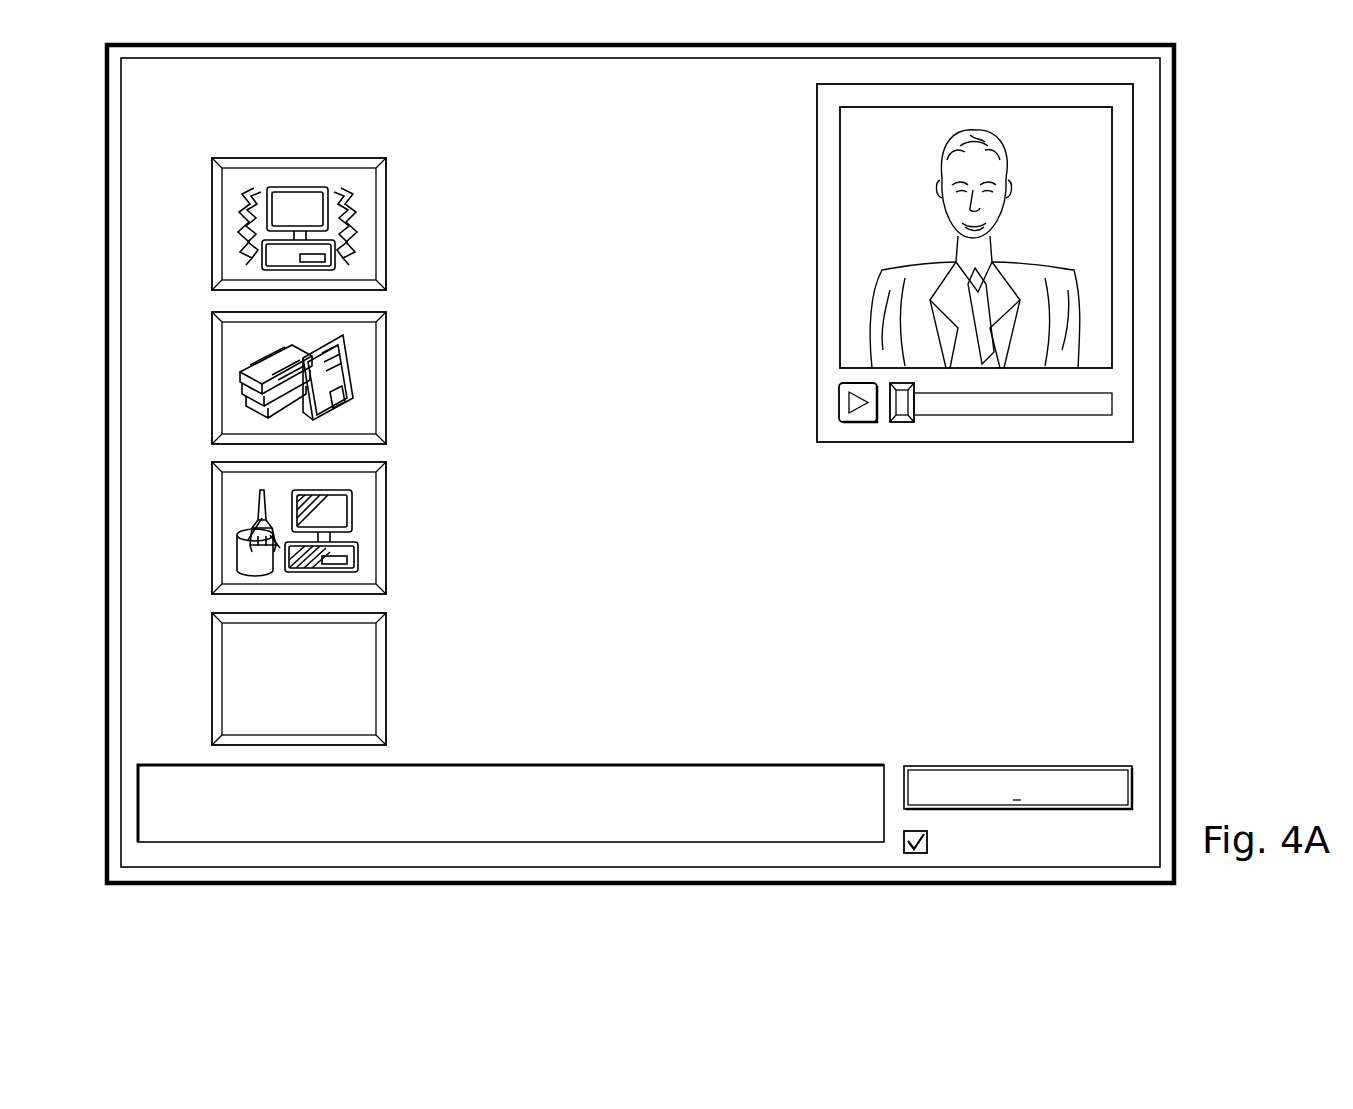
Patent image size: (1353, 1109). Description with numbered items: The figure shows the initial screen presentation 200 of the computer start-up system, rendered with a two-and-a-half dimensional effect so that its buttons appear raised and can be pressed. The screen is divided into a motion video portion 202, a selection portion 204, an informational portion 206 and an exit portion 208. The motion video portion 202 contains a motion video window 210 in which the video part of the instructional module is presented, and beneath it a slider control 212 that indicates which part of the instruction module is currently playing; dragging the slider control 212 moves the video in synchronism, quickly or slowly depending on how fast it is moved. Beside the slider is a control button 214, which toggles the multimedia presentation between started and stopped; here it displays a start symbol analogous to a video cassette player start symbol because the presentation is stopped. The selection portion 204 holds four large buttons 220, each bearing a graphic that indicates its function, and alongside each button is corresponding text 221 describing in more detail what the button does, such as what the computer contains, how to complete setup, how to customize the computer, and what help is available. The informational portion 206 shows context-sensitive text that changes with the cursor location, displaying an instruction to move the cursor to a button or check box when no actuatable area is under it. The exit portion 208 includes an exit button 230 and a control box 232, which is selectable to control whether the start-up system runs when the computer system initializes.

The initial screen presentation 200 is at (1178, 193).
The motion video portion 202 is at (941, 298).
The selection portion 204 is at (352, 147).
The informational portion 206 is at (668, 764).
The exit portion 208 is at (1080, 737).
The motion video window 210 is at (840, 235).
The slider control 212 is at (900, 423).
The control button 214 is at (858, 423).
The buttons 220 is at (212, 225).
The corresponding text 221 is at (575, 190).
The exit button 230 is at (1018, 765).
The control box 232 is at (915, 855).